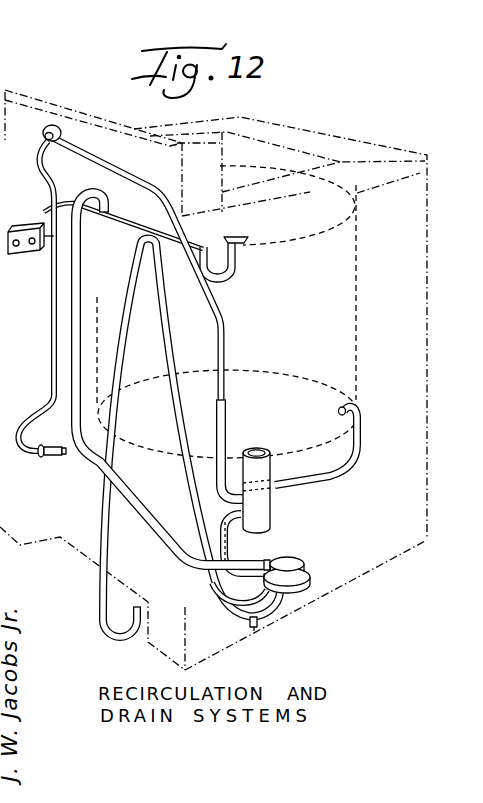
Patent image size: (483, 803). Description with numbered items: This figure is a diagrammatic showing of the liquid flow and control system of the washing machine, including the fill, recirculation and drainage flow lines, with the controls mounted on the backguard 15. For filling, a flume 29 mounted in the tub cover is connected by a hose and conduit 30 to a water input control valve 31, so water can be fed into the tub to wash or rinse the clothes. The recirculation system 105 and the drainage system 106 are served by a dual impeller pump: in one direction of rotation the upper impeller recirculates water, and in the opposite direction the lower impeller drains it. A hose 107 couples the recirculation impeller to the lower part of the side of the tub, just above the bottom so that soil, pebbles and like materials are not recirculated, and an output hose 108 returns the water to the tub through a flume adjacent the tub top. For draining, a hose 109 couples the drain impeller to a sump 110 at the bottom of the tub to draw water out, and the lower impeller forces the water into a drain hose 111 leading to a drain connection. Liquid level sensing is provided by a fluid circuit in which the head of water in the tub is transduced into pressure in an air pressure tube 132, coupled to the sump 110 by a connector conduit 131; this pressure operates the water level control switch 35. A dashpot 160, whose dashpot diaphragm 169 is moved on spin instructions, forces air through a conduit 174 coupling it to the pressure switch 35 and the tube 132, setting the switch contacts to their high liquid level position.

The backguard 15 is at (52, 97).
The flume 29 is at (250, 246).
The hose and conduit 30 is at (237, 282).
The water input control valve 31 is at (27, 252).
The water level control switch 35 is at (64, 136).
The recirculation system 105 is at (266, 556).
The drainage system 106 is at (258, 626).
The hose 107 is at (335, 481).
The output hose 108 is at (84, 264).
The hose 109 is at (264, 529).
The sump 110 is at (272, 503).
The drain hose 111 is at (181, 418).
The connector conduit 131 is at (227, 419).
The air pressure tube 132 is at (224, 337).
The dashpot 160 is at (52, 458).
The dashpot diaphragm 169 is at (58, 186).
The conduit 174 is at (51, 323).